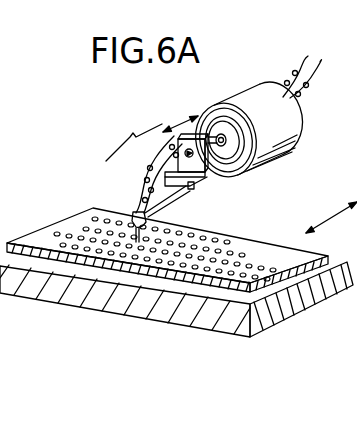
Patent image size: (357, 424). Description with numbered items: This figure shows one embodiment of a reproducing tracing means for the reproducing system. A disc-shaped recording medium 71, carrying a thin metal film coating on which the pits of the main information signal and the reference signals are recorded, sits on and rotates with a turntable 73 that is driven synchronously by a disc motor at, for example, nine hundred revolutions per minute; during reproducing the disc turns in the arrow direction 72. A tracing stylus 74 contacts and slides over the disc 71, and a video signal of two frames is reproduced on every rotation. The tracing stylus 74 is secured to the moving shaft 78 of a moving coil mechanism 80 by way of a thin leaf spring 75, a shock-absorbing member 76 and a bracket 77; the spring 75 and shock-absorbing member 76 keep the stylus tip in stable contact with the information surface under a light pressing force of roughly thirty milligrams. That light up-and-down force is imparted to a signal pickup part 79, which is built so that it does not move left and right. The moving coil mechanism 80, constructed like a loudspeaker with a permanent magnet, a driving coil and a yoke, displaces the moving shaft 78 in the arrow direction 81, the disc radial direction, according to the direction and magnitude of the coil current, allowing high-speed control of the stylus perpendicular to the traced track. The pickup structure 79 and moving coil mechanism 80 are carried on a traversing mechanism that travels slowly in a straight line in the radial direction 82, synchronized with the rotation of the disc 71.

The disc-shaped recording medium 71 is at (52, 221).
The arrow direction 72 is at (97, 332).
The turntable 73 is at (306, 300).
The tracing stylus 74 is at (165, 219).
The thin leaf spring 75 is at (141, 193).
The shock-absorbing member 76 is at (208, 183).
The bracket 77 is at (169, 147).
The moving shaft 78 is at (259, 169).
The signal pickup part 79 is at (134, 134).
The moving coil mechanism 80 is at (255, 117).
The arrow direction 81 is at (172, 123).
The radial direction 82 is at (338, 212).